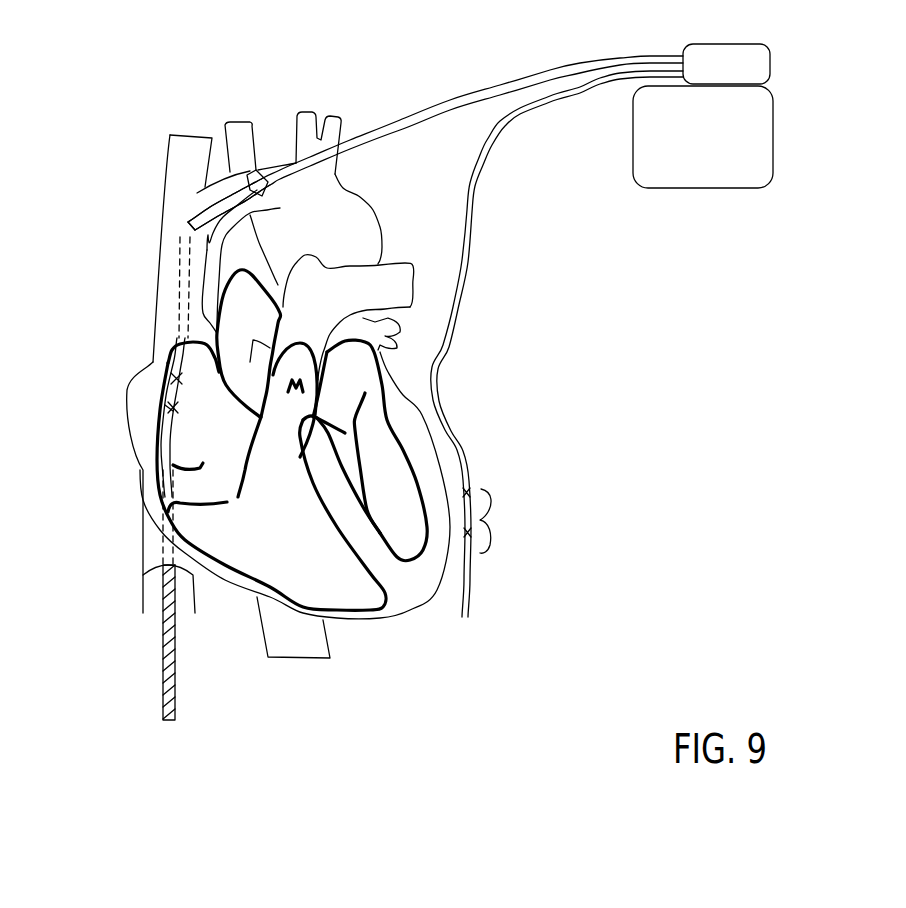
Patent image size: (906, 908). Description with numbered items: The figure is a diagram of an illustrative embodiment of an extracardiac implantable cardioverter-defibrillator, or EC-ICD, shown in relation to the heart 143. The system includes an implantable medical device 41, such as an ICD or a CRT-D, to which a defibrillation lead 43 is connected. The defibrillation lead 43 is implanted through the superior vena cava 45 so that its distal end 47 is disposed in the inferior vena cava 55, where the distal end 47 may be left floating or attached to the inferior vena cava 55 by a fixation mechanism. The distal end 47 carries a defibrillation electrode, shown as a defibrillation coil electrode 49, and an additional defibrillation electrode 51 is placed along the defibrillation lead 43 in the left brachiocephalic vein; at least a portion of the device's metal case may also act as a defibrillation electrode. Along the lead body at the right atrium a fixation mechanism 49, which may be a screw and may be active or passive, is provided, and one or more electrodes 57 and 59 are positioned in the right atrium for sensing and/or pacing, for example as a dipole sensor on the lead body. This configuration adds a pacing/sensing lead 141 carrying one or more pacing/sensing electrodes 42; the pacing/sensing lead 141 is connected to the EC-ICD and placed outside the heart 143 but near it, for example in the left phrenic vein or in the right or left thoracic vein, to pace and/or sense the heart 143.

The implantable medical device 41 is at (722, 226).
The pacing/sensing electrodes 42 is at (483, 520).
The defibrillation lead 43 is at (620, 55).
The superior vena cava 45 is at (160, 220).
The distal end 47 is at (162, 720).
The defibrillation coil electrode 49 is at (170, 403).
The additional defibrillation electrode 51 is at (240, 173).
The inferior vena cava 55 is at (140, 578).
The electrode 57 is at (170, 382).
The electrode 59 is at (167, 412).
The pacing/sensing lead 141 is at (462, 455).
The heart 143 is at (422, 660).